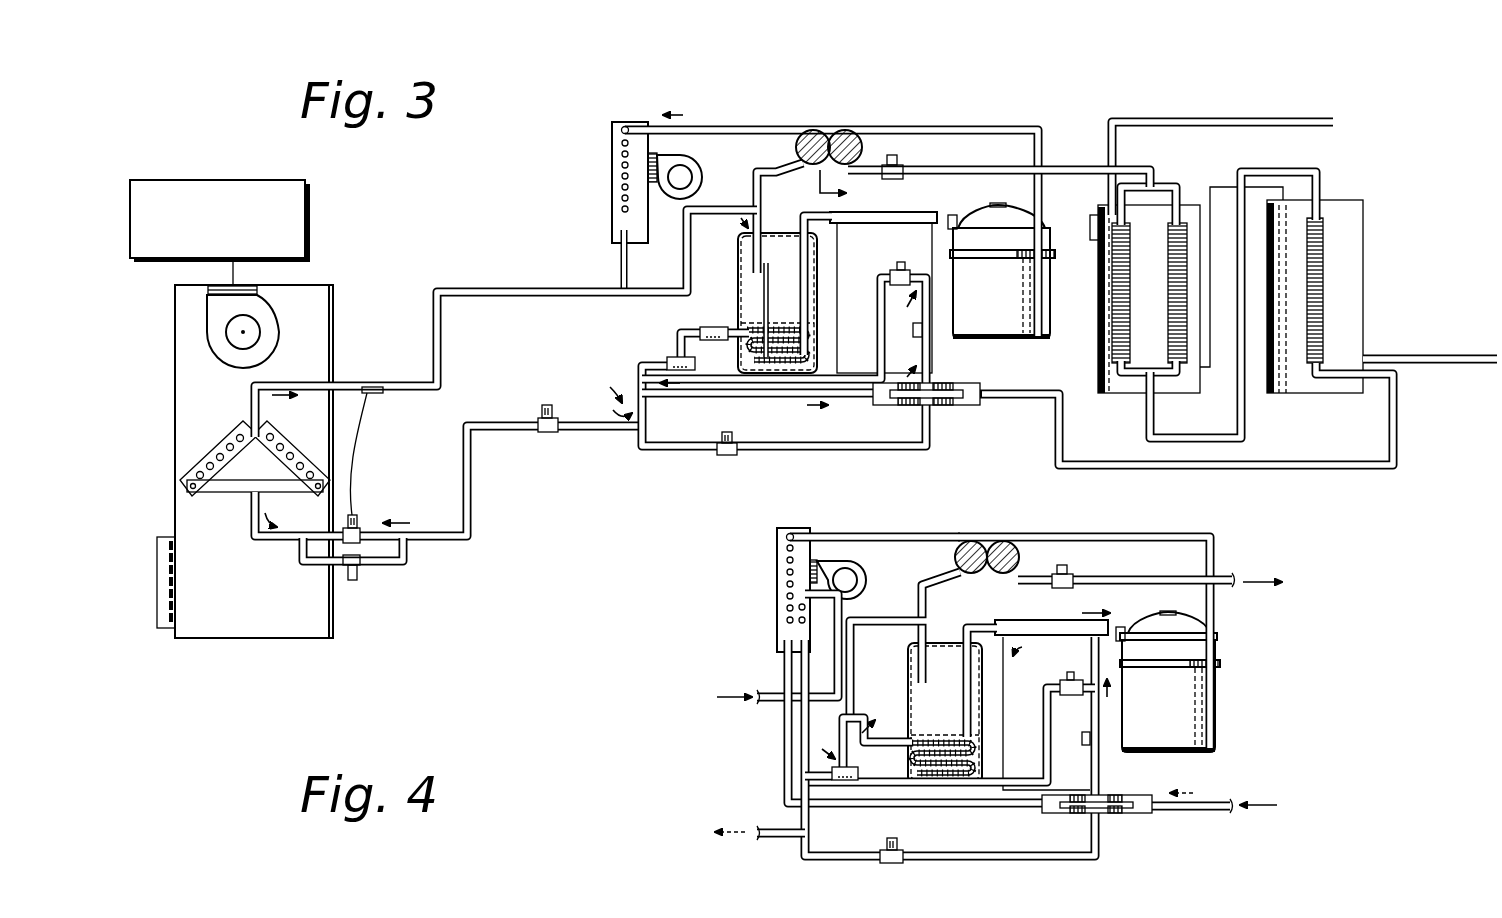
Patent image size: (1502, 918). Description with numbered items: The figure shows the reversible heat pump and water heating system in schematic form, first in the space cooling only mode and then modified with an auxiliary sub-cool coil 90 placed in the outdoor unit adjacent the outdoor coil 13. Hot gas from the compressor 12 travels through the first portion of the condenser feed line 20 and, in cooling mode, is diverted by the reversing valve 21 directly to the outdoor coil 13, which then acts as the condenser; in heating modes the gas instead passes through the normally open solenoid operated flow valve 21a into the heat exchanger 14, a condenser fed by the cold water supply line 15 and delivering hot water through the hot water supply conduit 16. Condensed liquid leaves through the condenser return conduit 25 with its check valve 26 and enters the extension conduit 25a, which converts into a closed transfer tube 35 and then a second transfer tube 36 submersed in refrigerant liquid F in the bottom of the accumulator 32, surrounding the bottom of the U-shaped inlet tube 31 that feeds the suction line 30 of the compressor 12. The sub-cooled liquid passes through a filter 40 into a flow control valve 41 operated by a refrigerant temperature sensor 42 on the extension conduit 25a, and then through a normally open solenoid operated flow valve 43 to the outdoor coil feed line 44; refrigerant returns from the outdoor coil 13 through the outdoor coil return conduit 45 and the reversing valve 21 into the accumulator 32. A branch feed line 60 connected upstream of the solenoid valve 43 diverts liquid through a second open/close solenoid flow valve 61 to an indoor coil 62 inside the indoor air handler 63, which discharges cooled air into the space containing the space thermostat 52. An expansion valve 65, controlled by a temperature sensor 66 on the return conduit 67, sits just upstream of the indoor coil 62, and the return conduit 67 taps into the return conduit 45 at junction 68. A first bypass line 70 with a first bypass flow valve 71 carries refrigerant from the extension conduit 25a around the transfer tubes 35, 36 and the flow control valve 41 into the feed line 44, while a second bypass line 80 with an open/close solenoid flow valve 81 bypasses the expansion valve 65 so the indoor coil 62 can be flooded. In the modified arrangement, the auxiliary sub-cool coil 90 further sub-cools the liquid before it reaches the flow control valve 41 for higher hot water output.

In FIG. 3, the compressor 12 is at (1022, 332).
In FIG. 4, the compressor 12 is at (1187, 740).
In FIG. 3, the outdoor coil 13 is at (612, 185).
In FIG. 4, the outdoor coil 13 is at (777, 548).
In FIG. 3, the heat exchanger 14 is at (1128, 416).
In FIG. 4, the heat exchanger 14 is at (1321, 706).
In FIG. 3, the cold water supply line 15 is at (1452, 363).
In FIG. 3, the hot water supply conduit 16 is at (1206, 122).
In FIG. 3, the condenser feed line 20 is at (977, 134).
In FIG. 4, the condenser feed line 20 is at (1143, 542).
In FIG. 3, the reversing valve 21 is at (795, 150).
In FIG. 4, the reversing valve 21 is at (955, 557).
In FIG. 3, the normally open solenoid operated flow valve 21a is at (886, 166).
In FIG. 4, the normally open solenoid operated flow valve 21a is at (1055, 575).
In FIG. 3, the condenser return conduit 25 is at (1055, 438).
In FIG. 4, the condenser return conduit 25 is at (1187, 813).
In FIG. 3, the extension conduit 25a is at (928, 363).
In FIG. 4, the extension conduit 25a is at (1100, 772).
In FIG. 3, the check valve 26 is at (968, 406).
In FIG. 4, the check valve 26 is at (1099, 815).
In FIG. 3, the suction line 30 is at (810, 213).
In FIG. 4, the suction line 30 is at (963, 628).
In FIG. 3, the U-shaped inlet tube 31 is at (808, 278).
In FIG. 4, the U-shaped inlet tube 31 is at (960, 687).
In FIG. 3, the accumulator 32 is at (740, 283).
In FIG. 4, the accumulator 32 is at (907, 698).
In FIG. 3, the closed transfer tube 35 is at (851, 227).
In FIG. 4, the closed transfer tube 35 is at (1053, 636).
In FIG. 3, the second transfer tube 36 is at (769, 285).
In FIG. 3, the filter 40 is at (712, 326).
In FIG. 3, the flow control valve 41 is at (675, 357).
In FIG. 4, the flow control valve 41 is at (858, 777).
In FIG. 3, the refrigerant temperature sensor 42 is at (914, 336).
In FIG. 4, the refrigerant temperature sensor 42 is at (1085, 746).
In FIG. 3, the normally open solenoid operated flow valve 43 is at (727, 457).
In FIG. 4, the normally open solenoid operated flow valve 43 is at (903, 851).
In FIG. 3, the outdoor coil feed line 44 is at (787, 393).
In FIG. 4, the outdoor coil feed line 44 is at (983, 792).
In FIG. 3, the outdoor coil return conduit 45 is at (735, 121).
In FIG. 4, the outdoor coil return conduit 45 is at (876, 531).
In FIG. 3, the space thermostat 52 is at (297, 221).
In FIG. 3, the branch feed line 60 is at (594, 432).
In FIG. 4, the branch feed line 60 is at (775, 838).
In FIG. 3, the second open/close solenoid flow valve 61 is at (550, 410).
In FIG. 3, the indoor coil 62 is at (200, 458).
In FIG. 4, the indoor coil 62 is at (659, 777).
In FIG. 3, the indoor air handler 63 is at (192, 396).
In FIG. 3, the expansion valve 65 is at (358, 520).
In FIG. 3, the temperature sensor 66 is at (370, 393).
In FIG. 3, the return conduit 67 is at (510, 288).
In FIG. 4, the return conduit 67 is at (772, 705).
In FIG. 3, the junction 68 is at (752, 210).
In FIG. 4, the junction 68 is at (915, 625).
In FIG. 3, the first bypass line 70 is at (857, 384).
In FIG. 3, the first bypass flow valve 71 is at (902, 268).
In FIG. 4, the first bypass flow valve 71 is at (1077, 683).
In FIG. 3, the second bypass line 80 is at (400, 562).
In FIG. 3, the open/close solenoid flow valve 81 is at (352, 580).
In FIG. 4, the auxiliary sub-cool coil 90 is at (777, 610).
In FIG. 3, the refrigerant liquid F is at (757, 320).
In FIG. 4, the refrigerant liquid F is at (948, 730).